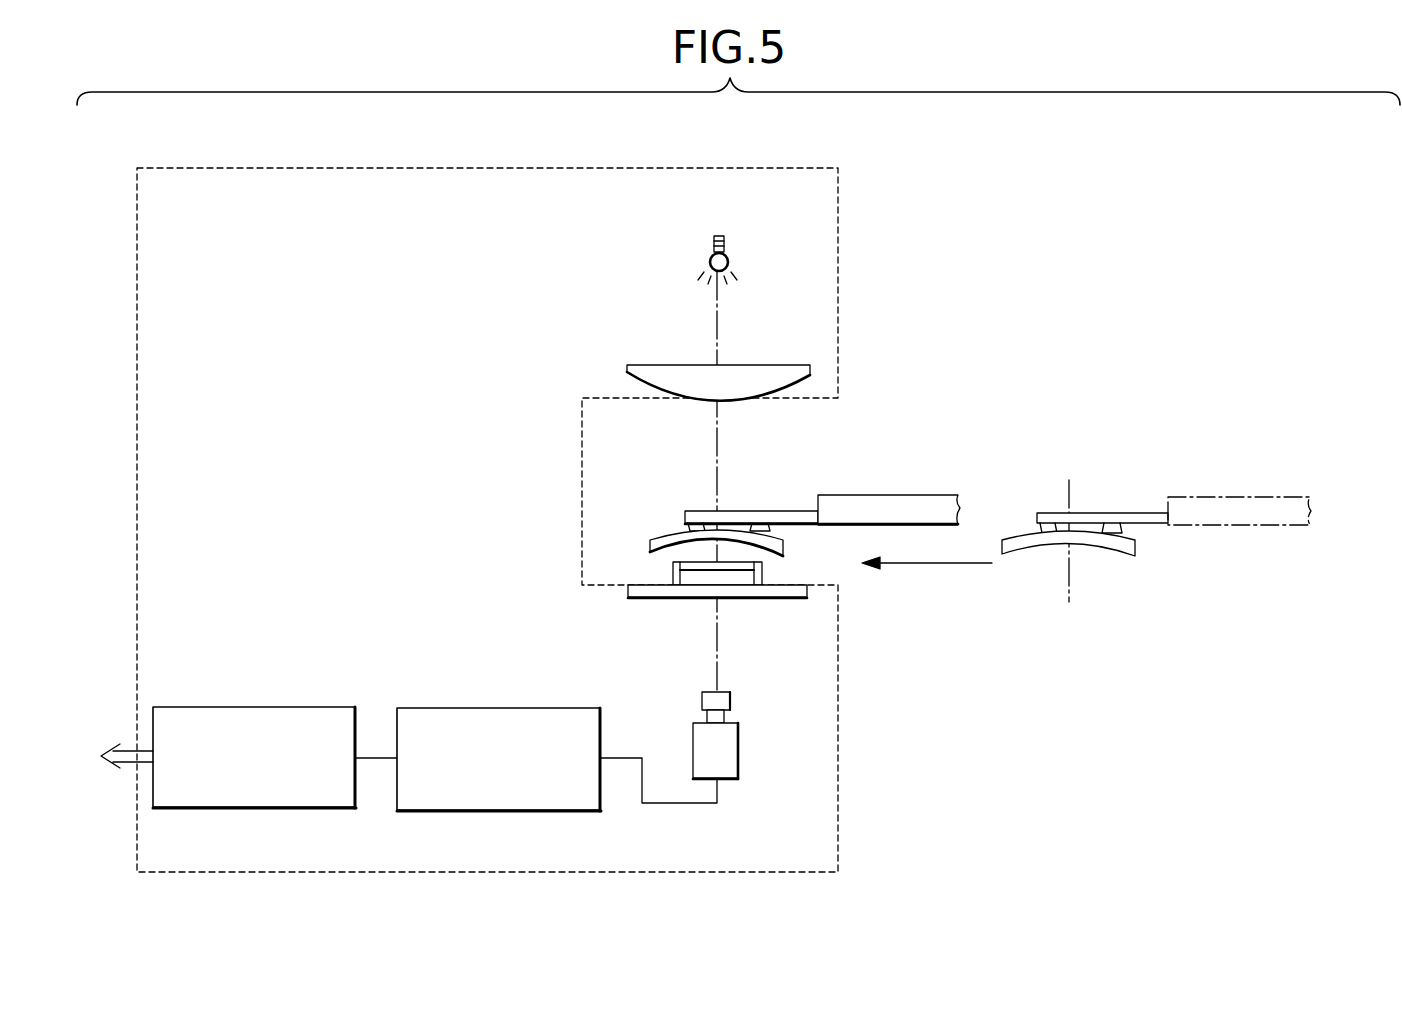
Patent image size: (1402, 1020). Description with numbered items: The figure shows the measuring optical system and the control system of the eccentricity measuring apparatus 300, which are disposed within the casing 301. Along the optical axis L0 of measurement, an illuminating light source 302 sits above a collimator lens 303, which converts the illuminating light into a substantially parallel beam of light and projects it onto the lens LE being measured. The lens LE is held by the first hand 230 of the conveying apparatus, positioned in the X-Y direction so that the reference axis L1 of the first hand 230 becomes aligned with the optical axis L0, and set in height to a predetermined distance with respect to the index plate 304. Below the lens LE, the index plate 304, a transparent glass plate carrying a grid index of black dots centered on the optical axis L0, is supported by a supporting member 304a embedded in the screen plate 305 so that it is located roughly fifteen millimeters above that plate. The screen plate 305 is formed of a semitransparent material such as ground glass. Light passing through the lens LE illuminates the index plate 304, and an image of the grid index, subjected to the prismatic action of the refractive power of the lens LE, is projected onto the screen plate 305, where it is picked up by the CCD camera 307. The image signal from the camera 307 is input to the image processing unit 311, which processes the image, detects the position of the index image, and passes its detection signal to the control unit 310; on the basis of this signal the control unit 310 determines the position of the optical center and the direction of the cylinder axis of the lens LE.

The measuring apparatus 300 is at (862, 254).
The casing 301 is at (231, 168).
The illuminating light source 302 is at (714, 243).
The collimator lens 303 is at (667, 365).
The index plate 304 is at (695, 566).
The supporting member 304a is at (673, 578).
The screen plate 305 is at (745, 597).
The CCD camera 307 is at (735, 750).
The control unit 310 is at (306, 707).
The image processing unit 311 is at (539, 708).
The first hand 230 is at (880, 495).
The lens LE is at (670, 538).
The optical axis of measurement L0 is at (720, 433).
The reference axis L1 is at (1072, 487).